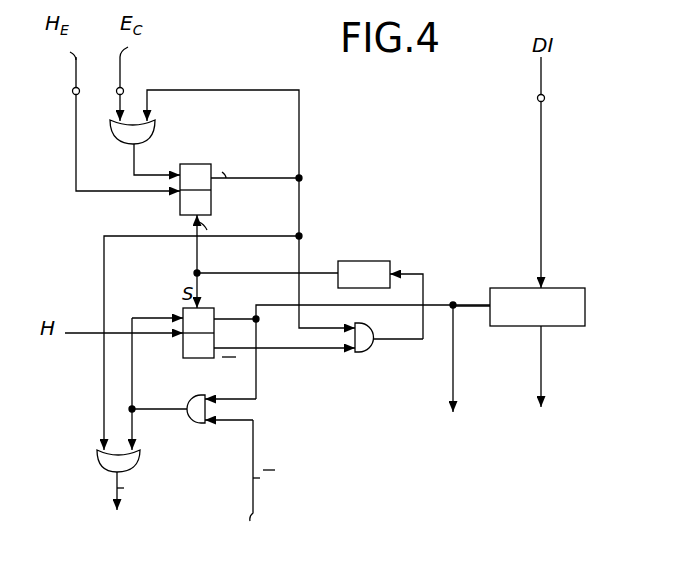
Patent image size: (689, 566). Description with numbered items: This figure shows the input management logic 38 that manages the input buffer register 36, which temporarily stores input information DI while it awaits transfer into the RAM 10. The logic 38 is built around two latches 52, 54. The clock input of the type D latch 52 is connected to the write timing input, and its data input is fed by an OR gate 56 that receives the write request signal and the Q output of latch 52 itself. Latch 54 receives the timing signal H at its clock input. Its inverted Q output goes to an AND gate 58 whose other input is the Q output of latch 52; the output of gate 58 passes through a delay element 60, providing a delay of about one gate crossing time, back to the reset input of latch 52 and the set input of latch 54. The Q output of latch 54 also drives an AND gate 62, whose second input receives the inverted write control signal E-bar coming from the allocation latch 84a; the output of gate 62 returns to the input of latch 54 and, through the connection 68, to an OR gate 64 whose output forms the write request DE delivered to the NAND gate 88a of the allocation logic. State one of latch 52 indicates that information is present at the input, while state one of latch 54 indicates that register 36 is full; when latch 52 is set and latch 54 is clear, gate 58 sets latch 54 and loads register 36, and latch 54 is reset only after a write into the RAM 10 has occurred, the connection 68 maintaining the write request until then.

The RAM 10 is at (541, 385).
The input buffer register 36 is at (565, 290).
The input management logic 38 is at (326, 216).
The latch 52 is at (239, 190).
The latch 54 is at (188, 349).
The OR gate 56 is at (128, 150).
The AND gate 58 is at (362, 352).
The delay element 60 is at (361, 264).
The AND gate 62 is at (192, 395).
The OR gate 64 is at (97, 460).
The connection 68 is at (134, 430).
The latch 84a is at (247, 486).
The NAND gate 88a is at (110, 534).